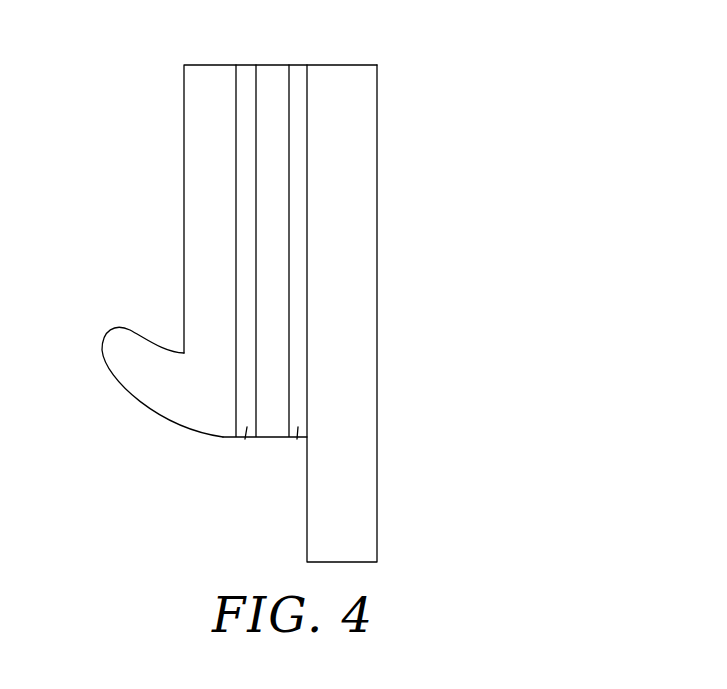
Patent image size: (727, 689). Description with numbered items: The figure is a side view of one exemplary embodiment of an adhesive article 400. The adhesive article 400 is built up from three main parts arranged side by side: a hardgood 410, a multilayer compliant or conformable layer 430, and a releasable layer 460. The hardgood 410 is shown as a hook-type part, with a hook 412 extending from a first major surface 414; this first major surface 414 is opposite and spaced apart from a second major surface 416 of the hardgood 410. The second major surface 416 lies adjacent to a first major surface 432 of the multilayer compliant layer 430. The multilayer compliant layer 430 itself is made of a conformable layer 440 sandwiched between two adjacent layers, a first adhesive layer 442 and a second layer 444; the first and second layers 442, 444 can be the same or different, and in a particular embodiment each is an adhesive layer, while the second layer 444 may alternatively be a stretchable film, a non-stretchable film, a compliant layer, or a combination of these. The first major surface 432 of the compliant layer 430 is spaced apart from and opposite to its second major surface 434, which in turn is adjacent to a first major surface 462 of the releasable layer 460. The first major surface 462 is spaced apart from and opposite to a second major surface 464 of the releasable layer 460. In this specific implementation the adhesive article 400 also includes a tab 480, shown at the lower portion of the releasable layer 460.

The adhesive article 400 is at (500, 172).
The hardgood 410 is at (196, 100).
The hook 412 is at (122, 361).
The first major surface 414 is at (184, 228).
The second major surface 416 is at (236, 168).
The multilayer compliant or conformable layer 430 is at (308, 57).
The first major surface 432 is at (236, 287).
The second major surface 434 is at (308, 129).
The conformable layer 440 is at (270, 212).
The first adhesive layer 442 is at (245, 439).
The second layer 444 is at (297, 439).
The releasable layer 460 is at (350, 82).
The first major surface 462 is at (308, 294).
The second major surface 464 is at (378, 344).
The tab 480 is at (363, 484).